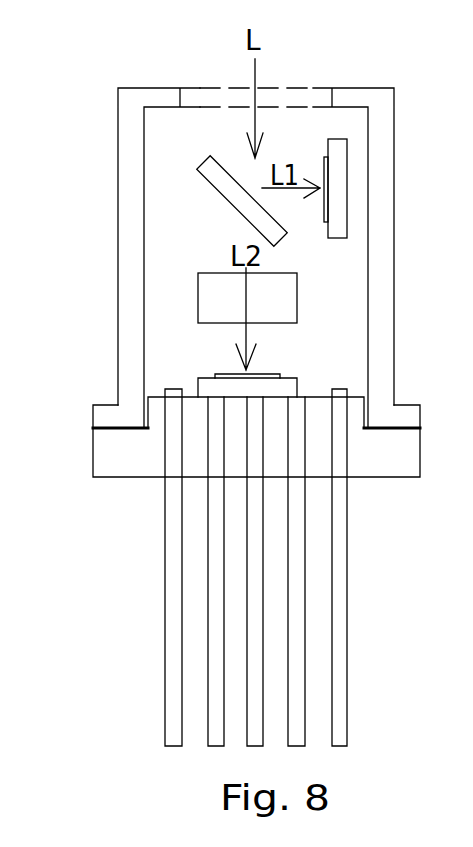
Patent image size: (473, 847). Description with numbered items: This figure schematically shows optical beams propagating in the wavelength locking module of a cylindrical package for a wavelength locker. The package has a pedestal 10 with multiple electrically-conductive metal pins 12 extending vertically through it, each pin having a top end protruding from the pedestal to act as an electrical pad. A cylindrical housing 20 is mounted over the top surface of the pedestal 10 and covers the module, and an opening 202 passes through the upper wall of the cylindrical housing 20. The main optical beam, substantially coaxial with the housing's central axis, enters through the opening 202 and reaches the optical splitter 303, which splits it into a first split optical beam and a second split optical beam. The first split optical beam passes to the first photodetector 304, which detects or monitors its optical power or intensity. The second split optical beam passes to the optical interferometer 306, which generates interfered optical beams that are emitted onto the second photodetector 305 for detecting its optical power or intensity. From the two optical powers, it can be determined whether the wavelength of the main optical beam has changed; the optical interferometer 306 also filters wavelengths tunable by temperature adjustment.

The pedestal 10 is at (110, 459).
The electrically-conductive metal pins 12 is at (338, 558).
The cylindrical housing 20 is at (385, 303).
The opening 202 is at (333, 97).
The optical splitter 303 is at (205, 170).
The first photodetector 304 is at (338, 190).
The second photodetector 305 is at (205, 387).
The optical interferometer 306 is at (208, 303).